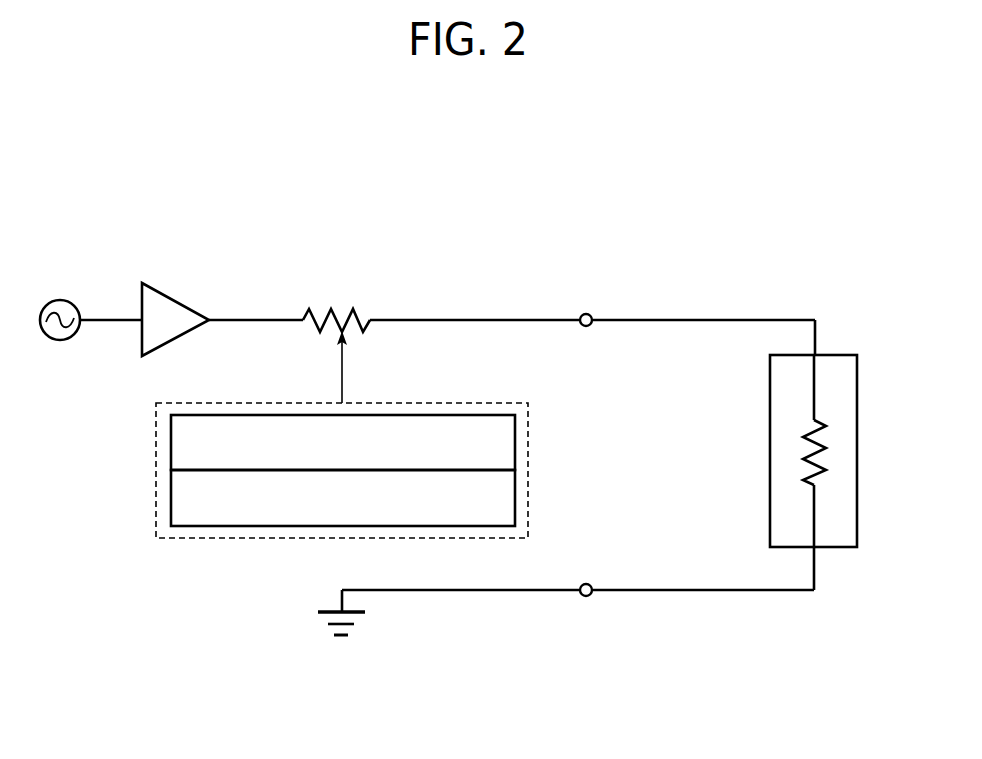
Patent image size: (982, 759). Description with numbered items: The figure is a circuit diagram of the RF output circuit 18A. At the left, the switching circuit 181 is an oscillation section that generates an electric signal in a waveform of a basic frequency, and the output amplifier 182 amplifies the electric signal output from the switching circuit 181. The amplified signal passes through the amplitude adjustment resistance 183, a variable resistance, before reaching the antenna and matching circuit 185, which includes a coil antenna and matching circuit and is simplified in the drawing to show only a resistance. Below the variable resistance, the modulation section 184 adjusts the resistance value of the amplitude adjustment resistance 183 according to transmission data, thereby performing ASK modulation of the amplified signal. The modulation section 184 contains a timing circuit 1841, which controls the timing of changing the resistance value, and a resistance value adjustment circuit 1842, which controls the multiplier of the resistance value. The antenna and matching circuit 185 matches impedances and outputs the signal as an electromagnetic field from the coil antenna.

The RF output circuit 18A is at (768, 262).
The switching circuit 181 is at (72, 303).
The output amplifier 182 is at (174, 300).
The amplitude adjustment resistance 183 is at (364, 318).
The modulation section 184 is at (514, 403).
The timing circuit 1841 is at (515, 444).
The resistance value adjustment circuit 1842 is at (515, 499).
The antenna and matching circuit 185 is at (832, 355).